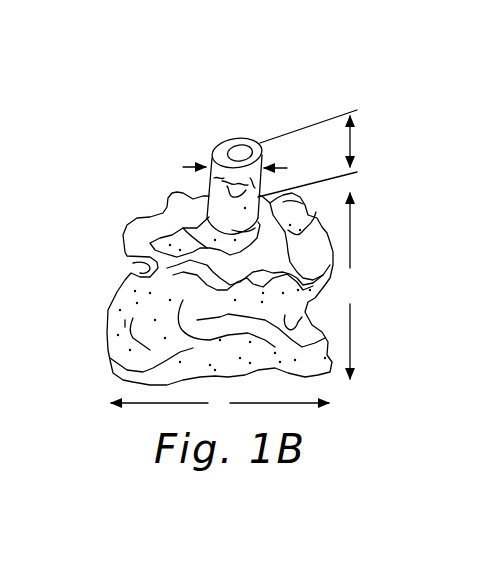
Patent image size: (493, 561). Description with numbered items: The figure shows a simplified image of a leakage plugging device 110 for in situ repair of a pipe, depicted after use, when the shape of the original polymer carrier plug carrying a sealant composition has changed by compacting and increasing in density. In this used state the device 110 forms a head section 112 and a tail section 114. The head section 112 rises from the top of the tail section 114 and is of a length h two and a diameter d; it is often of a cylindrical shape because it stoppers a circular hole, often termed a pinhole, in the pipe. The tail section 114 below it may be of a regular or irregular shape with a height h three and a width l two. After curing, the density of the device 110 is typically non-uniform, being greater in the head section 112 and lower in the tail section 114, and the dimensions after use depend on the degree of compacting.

The leakage plugging device after use 110 is at (415, 80).
The head section 112 is at (218, 148).
The tail section 114 is at (92, 300).